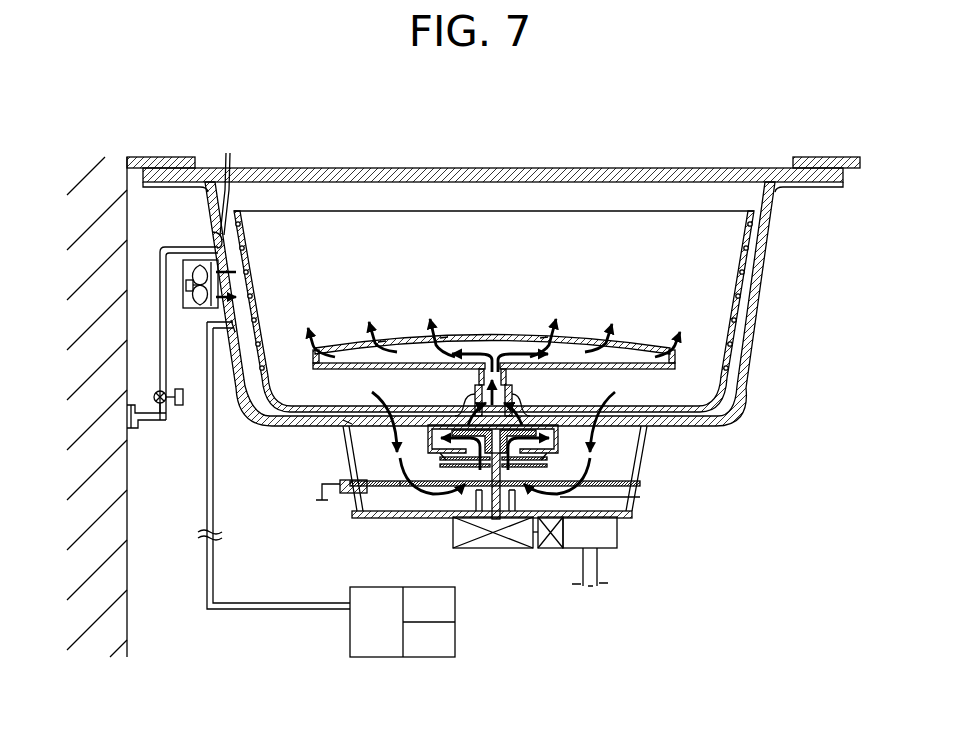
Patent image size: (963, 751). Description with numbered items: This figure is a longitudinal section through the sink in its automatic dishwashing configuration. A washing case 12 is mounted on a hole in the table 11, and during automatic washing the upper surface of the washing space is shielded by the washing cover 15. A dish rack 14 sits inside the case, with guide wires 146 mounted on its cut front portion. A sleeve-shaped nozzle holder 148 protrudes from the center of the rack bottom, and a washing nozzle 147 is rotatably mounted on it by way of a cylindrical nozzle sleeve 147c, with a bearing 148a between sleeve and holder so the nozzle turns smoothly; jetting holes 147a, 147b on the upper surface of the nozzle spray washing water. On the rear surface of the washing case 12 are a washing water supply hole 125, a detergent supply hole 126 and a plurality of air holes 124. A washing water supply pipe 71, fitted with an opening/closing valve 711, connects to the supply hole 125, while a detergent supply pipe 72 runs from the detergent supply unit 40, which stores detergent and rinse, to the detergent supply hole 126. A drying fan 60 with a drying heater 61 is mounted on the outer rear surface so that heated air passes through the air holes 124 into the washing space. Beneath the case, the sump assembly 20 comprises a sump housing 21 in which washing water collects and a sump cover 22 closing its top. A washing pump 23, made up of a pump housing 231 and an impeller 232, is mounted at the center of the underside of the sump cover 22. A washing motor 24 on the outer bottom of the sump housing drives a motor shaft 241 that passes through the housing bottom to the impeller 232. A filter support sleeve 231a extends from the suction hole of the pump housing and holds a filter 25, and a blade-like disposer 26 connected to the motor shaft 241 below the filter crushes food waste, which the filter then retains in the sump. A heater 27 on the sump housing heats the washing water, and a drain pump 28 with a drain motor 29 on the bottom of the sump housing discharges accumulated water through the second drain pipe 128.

The table 11 is at (827, 160).
The washing case 12 is at (768, 260).
The dish rack 14 is at (237, 216).
The washing cover 15 is at (703, 169).
The sump assembly 20 is at (449, 483).
The sump housing 21 is at (343, 472).
The sump cover 22 is at (335, 405).
The washing pump 23 is at (579, 454).
The washing motor 24 is at (520, 538).
The filter 25 is at (482, 520).
The disposer 26 is at (467, 488).
The heater 27 is at (410, 487).
The drain pump 28 is at (615, 533).
The drain motor 29 is at (558, 545).
The detergent supply unit 40 is at (382, 658).
The drying fan 60 is at (182, 287).
The drying heater 61 is at (207, 310).
The washing water supply pipe 71 is at (163, 273).
The detergent supply pipe 72 is at (207, 387).
The opening/closing valve 711 is at (170, 403).
The air holes 124 is at (225, 182).
The washing water supply hole 125 is at (217, 232).
The detergent supply hole 126 is at (233, 327).
The second drain pipe 128 is at (592, 568).
The guide wires 146 is at (247, 241).
The washing nozzle 147 is at (457, 340).
The jetting hole 147a is at (478, 378).
The jetting hole 147b is at (595, 368).
The nozzle sleeve 147c is at (388, 340).
The nozzle holder 148 is at (571, 362).
The bearing 148a is at (506, 384).
The pump housing 231 is at (560, 433).
The filter support sleeve 231a is at (397, 484).
The impeller 232 is at (560, 460).
The motor shaft 241 is at (560, 499).